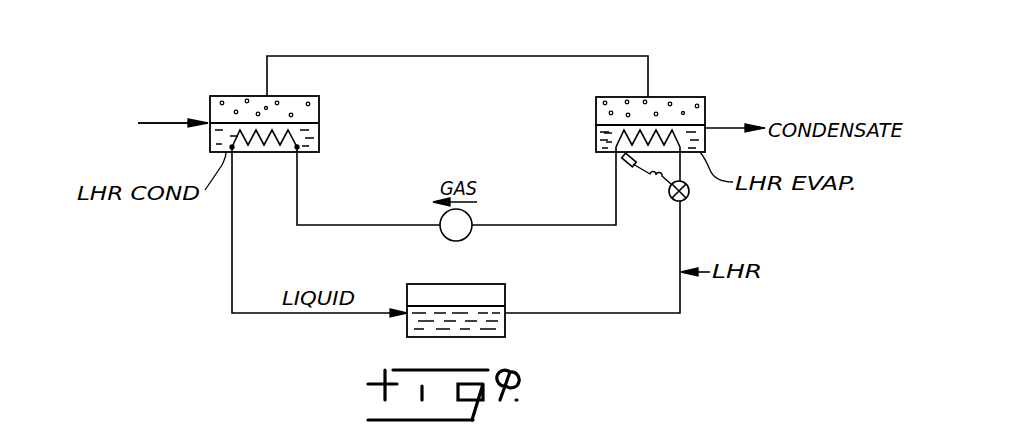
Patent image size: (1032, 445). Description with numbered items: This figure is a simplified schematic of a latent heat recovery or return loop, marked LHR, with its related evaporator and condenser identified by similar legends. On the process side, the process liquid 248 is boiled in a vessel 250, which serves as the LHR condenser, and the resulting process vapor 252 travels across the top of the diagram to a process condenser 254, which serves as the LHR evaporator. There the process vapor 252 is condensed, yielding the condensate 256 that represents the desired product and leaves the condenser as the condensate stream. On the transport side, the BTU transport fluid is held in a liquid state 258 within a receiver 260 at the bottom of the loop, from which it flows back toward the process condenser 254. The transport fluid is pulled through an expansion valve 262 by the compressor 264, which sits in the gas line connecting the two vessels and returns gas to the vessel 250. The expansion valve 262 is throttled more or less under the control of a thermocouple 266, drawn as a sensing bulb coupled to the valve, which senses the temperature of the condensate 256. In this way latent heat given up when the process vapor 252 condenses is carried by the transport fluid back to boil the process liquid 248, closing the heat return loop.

The process liquid 248 is at (210, 140).
The vessel 250 is at (319, 112).
The process vapor 252 is at (280, 102).
The process condenser 254 is at (688, 97).
The condensate 256 is at (596, 137).
The liquid state 258 is at (413, 328).
The receiver 260 is at (505, 291).
The expansion valve 262 is at (688, 198).
The compressor 264 is at (446, 235).
The thermocouple 266 is at (630, 168).